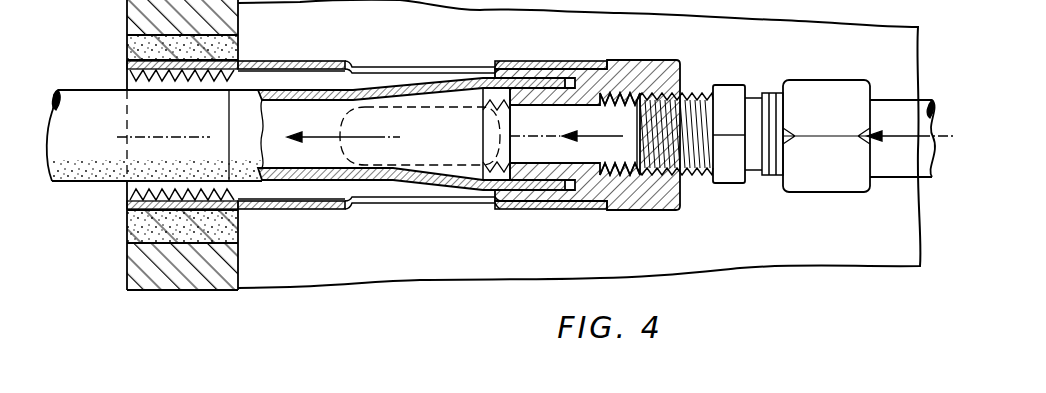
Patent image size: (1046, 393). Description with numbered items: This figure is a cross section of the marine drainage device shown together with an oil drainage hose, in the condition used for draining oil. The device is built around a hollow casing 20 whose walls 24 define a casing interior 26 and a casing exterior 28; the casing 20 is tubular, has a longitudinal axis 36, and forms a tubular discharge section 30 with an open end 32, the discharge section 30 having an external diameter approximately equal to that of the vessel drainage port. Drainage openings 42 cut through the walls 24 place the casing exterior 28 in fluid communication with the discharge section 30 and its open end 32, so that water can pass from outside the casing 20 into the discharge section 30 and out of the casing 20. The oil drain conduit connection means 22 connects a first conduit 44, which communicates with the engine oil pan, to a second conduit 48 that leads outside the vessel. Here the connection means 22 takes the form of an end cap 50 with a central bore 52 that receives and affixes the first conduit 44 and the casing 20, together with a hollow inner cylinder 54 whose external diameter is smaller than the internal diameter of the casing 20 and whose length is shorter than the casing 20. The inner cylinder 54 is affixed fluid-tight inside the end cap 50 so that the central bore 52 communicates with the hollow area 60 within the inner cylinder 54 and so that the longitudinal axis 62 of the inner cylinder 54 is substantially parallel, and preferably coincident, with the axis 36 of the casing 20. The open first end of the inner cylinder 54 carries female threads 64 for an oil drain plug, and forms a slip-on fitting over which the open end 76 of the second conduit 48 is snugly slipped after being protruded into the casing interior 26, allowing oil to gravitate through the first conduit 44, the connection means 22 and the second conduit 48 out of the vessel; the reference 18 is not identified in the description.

The burner assembly 18 is at (447, 54).
The casing 20 is at (311, 54).
The oil drain conduit connection means 22 is at (660, 214).
The walls 24 is at (316, 210).
The casing interior 26 is at (326, 77).
The casing exterior 28 is at (280, 268).
The tubular discharge section 30 is at (251, 54).
The open end 32 is at (128, 77).
The longitudinal axis 36 is at (178, 136).
The drainage openings 42 is at (452, 70).
The first conduit 44 is at (887, 100).
The second conduit 48 is at (365, 92).
The end cap 50 is at (680, 70).
The central bore 52 is at (612, 113).
The inner cylinder 54 is at (568, 174).
The hollow area 60 is at (523, 148).
The longitudinal axis 62 is at (483, 150).
The female threads 64 is at (483, 115).
The open end 76 is at (518, 78).